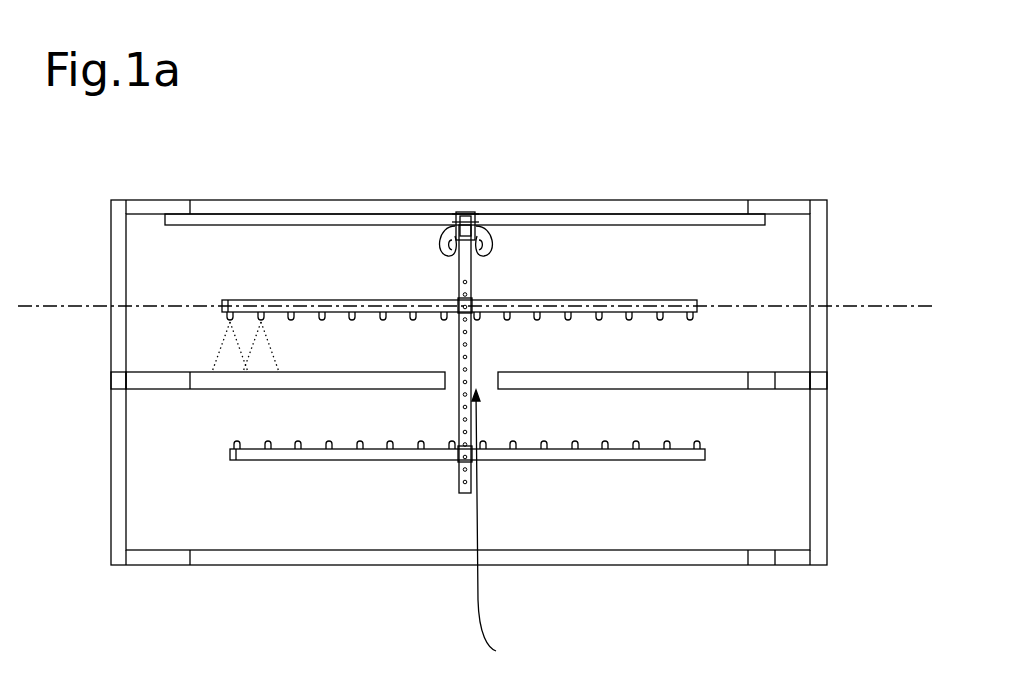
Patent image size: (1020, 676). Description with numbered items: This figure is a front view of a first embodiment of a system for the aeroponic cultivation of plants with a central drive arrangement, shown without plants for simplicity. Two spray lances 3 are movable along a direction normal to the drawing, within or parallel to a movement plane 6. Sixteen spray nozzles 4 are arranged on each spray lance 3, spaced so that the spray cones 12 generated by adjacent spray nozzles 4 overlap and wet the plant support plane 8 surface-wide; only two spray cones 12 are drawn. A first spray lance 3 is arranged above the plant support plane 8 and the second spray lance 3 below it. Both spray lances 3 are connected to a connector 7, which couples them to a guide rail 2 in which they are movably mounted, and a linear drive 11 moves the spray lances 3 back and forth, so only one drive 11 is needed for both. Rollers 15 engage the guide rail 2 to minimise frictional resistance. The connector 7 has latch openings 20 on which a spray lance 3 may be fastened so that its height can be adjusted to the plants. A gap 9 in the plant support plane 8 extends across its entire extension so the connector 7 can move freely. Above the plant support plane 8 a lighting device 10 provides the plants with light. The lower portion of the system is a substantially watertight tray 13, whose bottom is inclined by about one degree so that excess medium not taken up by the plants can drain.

The guide rail 2 is at (460, 219).
The spray lance 3 is at (695, 306).
The spray nozzle 4 is at (666, 455).
The movement plane 6 is at (877, 306).
The connector 7 is at (475, 355).
The plant support plane 8 is at (729, 386).
The gap 9 is at (494, 528).
The lighting device 10 is at (272, 218).
The linear drive 11 is at (455, 220).
The spray cone 12 is at (215, 352).
The tray 13 is at (725, 553).
The roller 15 is at (488, 234).
The latch opening 20 is at (458, 335).